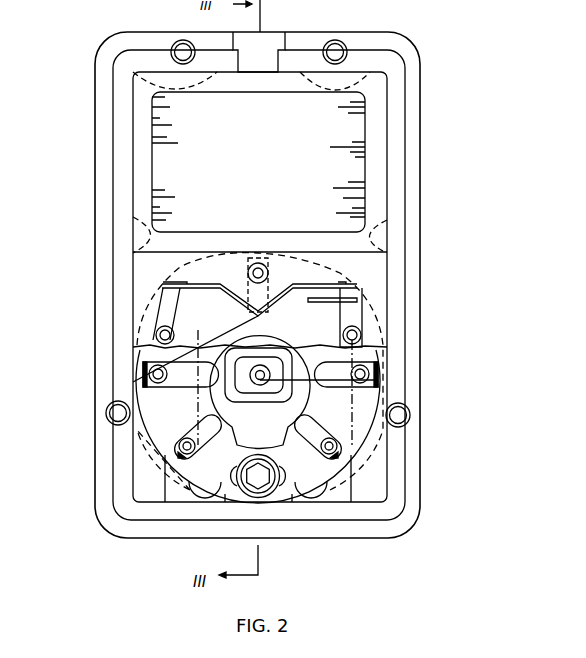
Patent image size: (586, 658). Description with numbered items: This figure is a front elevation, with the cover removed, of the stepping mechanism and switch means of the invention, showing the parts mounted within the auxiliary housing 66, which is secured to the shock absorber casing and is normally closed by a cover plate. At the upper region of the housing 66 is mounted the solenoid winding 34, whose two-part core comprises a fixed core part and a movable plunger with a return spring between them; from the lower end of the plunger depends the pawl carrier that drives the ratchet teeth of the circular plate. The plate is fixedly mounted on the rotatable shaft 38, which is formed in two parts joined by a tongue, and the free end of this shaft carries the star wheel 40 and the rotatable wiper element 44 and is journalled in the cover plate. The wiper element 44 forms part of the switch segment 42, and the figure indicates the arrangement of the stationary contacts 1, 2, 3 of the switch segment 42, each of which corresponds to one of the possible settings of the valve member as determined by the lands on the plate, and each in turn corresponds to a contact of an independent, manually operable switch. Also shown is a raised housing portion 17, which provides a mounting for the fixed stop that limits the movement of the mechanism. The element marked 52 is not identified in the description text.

The stationary switch contact 1 is at (377, 380).
The stationary switch contact 2 is at (303, 440).
The stationary switch contact 3 is at (175, 262).
The raised housing portion 17 is at (175, 305).
The solenoid winding 34 is at (256, 182).
The rotatable shaft 38 is at (367, 387).
The star wheel 40 is at (147, 371).
The switch segment 42 is at (360, 447).
The rotatable wiper element 44 is at (273, 433).
The support bracket 52 is at (360, 292).
The auxiliary housing 66 is at (108, 192).